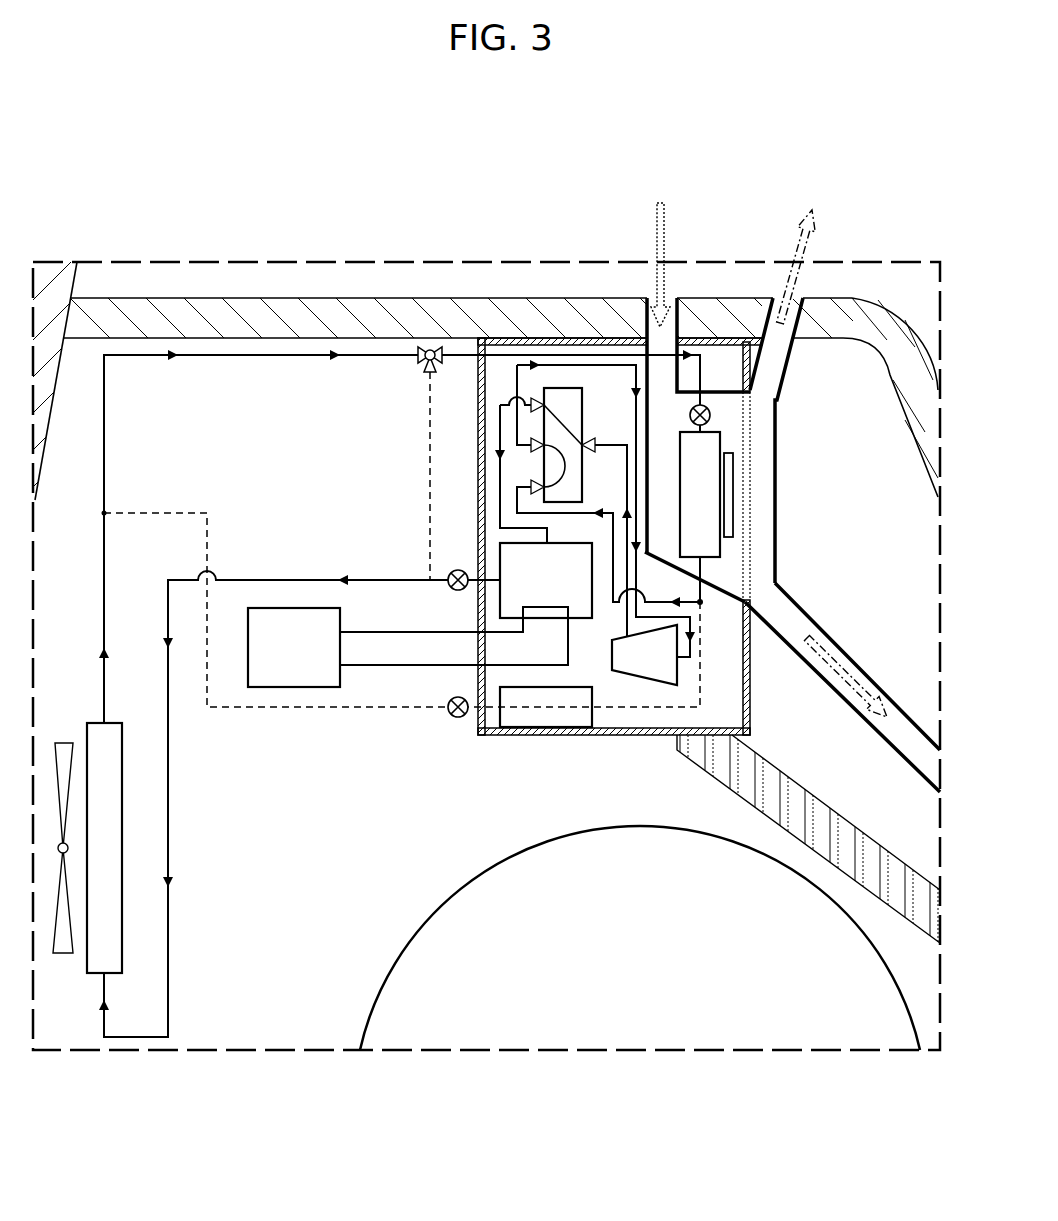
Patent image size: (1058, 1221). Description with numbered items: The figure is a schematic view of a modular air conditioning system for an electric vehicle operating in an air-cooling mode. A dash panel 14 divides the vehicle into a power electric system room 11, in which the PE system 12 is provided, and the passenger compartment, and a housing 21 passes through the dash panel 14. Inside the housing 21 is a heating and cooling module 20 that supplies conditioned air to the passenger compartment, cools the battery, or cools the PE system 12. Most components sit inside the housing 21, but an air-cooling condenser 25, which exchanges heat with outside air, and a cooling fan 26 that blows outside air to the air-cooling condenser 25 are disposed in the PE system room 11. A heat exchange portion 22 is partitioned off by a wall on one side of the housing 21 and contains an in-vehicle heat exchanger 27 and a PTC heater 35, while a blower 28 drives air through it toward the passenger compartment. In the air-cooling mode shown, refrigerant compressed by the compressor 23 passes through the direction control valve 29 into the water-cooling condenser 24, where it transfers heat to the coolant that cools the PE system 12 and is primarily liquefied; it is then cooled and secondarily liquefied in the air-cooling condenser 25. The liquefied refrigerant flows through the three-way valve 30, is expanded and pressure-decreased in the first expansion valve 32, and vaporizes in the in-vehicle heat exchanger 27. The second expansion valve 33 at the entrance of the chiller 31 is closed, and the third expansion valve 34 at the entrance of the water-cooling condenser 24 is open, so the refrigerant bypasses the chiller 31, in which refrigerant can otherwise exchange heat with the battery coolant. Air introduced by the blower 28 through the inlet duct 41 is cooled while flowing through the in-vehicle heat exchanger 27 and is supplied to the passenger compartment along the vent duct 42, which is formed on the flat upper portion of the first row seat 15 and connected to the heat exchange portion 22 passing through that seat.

The power electric system room 11 is at (313, 378).
The PE system 12 is at (270, 668).
The dash panel 14 is at (808, 818).
The first row seat 15 is at (920, 430).
The heating and cooling module 20 is at (596, 338).
The housing 21 is at (480, 470).
The heat exchange portion 22 is at (727, 572).
The compressor 23 is at (640, 672).
The water-cooling condenser 24 is at (500, 553).
The air-cooling condenser 25 is at (108, 918).
The cooling fan 26 is at (63, 745).
The in-vehicle heat exchanger 27 is at (710, 545).
The blower 28 is at (663, 540).
The direction control valve 29 is at (557, 388).
The three-way valve 30 is at (420, 372).
The chiller 31 is at (515, 712).
The first expansion valve 32 is at (713, 403).
The second expansion valve 33 is at (462, 718).
The third expansion valve 34 is at (452, 572).
The PTC heater 35 is at (728, 470).
The inlet duct 41 is at (647, 298).
The vent duct 42 is at (803, 313).